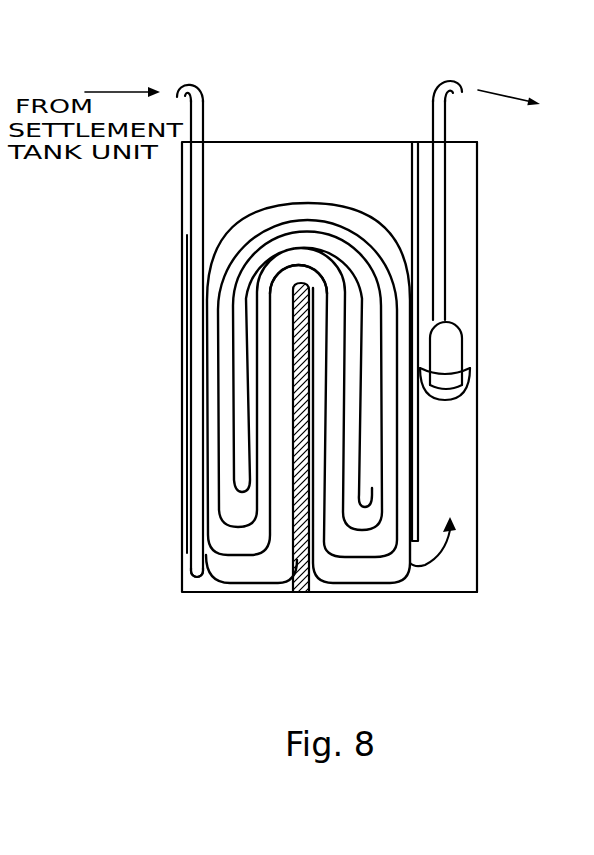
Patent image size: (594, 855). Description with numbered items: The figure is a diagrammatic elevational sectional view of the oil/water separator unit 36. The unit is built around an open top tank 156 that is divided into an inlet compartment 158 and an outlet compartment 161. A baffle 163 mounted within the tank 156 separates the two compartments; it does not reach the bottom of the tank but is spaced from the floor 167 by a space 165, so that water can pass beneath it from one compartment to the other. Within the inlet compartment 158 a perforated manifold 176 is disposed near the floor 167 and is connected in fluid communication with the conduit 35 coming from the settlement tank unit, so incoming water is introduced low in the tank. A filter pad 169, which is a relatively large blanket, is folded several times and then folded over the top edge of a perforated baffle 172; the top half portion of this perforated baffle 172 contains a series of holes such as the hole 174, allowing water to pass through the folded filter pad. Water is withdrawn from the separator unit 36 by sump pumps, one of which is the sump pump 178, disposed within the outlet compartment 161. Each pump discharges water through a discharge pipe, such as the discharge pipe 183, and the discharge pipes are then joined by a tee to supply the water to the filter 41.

The conduit 35 is at (205, 91).
The oil/water separator unit 36 is at (213, 617).
The filter 41 is at (445, 77).
The open top tank 156 is at (180, 492).
The inlet compartment 158 is at (300, 160).
The outlet compartment 161 is at (466, 148).
The baffle 163 is at (426, 447).
The space 165 is at (420, 575).
The floor 167 is at (440, 592).
The filter pad 169 is at (338, 196).
The perforated baffle 172 is at (312, 598).
The hole 174 is at (288, 334).
The perforated manifold 176 is at (185, 558).
The sump pump 178 is at (468, 333).
The discharge pipe 183 is at (447, 222).